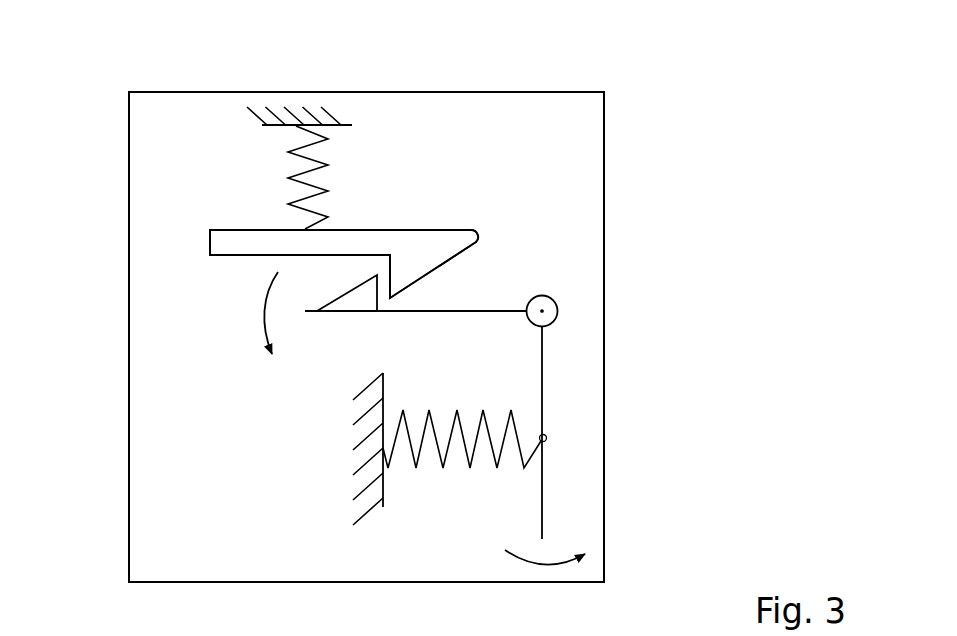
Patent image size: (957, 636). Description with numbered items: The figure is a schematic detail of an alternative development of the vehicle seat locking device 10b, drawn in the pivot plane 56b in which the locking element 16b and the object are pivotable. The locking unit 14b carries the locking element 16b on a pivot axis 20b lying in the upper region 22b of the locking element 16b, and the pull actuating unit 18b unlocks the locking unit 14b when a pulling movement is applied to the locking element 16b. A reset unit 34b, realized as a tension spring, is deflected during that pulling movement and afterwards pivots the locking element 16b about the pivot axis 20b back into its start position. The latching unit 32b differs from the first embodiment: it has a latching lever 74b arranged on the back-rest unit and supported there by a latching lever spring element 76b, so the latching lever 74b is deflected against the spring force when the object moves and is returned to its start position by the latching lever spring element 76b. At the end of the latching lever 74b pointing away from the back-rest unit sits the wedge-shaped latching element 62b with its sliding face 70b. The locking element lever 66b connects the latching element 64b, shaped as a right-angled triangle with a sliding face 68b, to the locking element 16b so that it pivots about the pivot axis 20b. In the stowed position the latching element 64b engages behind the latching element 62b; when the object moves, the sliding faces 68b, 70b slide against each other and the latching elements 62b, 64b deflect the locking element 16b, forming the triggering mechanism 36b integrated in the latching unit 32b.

The vehicle seat locking device 10b is at (705, 95).
The locking unit 14b is at (743, 115).
The locking element 16b is at (542, 509).
The pull actuating unit 18b is at (740, 290).
The pivot axis 20b is at (558, 316).
The upper region 22b is at (655, 318).
The latching unit 32b is at (385, 190).
The reset unit 34b is at (436, 484).
The triggering mechanism 36b is at (512, 286).
The pivot plane 56b is at (207, 92).
The latching element 62b is at (415, 253).
The latching element 64b is at (352, 292).
The locking element lever 66b is at (483, 311).
The sliding face 68b is at (345, 292).
The sliding face 70b is at (458, 268).
The latching lever 74b is at (260, 245).
The latching lever spring element 76b is at (300, 158).